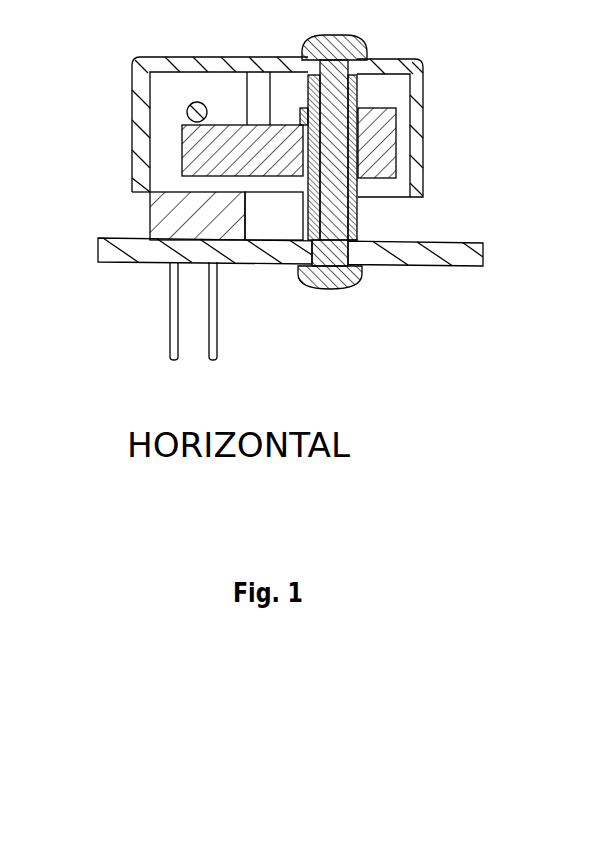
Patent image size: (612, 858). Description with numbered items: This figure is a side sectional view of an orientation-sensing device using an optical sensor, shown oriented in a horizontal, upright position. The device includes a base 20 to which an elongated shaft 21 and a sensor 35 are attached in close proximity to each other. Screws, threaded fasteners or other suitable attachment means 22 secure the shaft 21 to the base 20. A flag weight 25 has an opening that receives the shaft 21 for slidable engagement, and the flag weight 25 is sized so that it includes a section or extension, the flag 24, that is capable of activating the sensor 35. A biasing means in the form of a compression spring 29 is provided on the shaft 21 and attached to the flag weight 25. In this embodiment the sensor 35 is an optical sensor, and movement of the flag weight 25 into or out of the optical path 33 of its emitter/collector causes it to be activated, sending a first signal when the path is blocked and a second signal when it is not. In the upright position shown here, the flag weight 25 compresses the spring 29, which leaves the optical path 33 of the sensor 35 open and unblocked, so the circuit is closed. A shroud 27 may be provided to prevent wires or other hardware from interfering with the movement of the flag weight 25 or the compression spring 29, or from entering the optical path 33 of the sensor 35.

The base 20 is at (462, 258).
The elongated shaft 21 is at (358, 215).
The attachment means 22 is at (345, 43).
The flag 24 is at (210, 148).
The flag weight 25 is at (385, 146).
The shroud 27 is at (203, 63).
The compression spring 29 is at (360, 232).
The optical path 33 is at (192, 104).
The sensor 35 is at (166, 172).